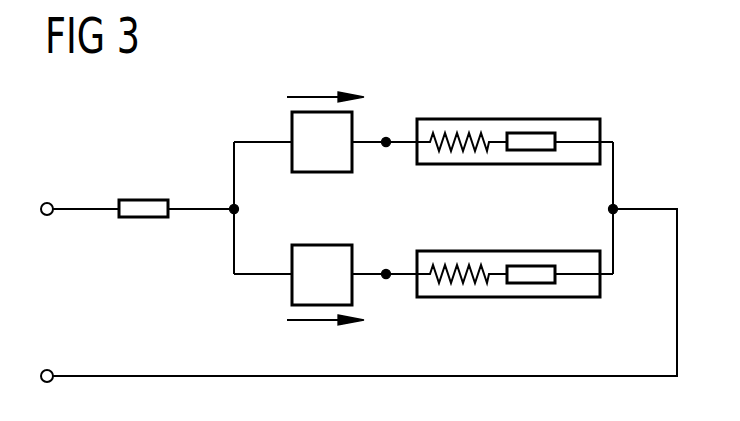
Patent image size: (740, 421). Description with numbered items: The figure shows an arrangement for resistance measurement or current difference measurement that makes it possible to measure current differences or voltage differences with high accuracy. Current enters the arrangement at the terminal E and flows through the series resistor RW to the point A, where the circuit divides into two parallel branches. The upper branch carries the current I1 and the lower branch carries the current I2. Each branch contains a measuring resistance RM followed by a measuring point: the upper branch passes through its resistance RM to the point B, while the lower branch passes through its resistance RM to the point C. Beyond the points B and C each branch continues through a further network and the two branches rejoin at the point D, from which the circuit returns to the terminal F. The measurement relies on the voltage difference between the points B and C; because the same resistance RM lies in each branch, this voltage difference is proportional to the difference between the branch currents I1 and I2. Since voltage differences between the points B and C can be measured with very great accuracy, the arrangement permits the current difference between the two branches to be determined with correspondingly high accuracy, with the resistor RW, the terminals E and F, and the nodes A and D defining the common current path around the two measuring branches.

The point E is at (49, 201).
The point F is at (48, 369).
The resistor RW is at (143, 199).
The point A is at (236, 209).
The point B is at (389, 135).
The point C is at (388, 268).
The point D is at (616, 206).
The resistance measurement RM is at (322, 208).
The current I1 is at (325, 77).
The current I2 is at (325, 340).